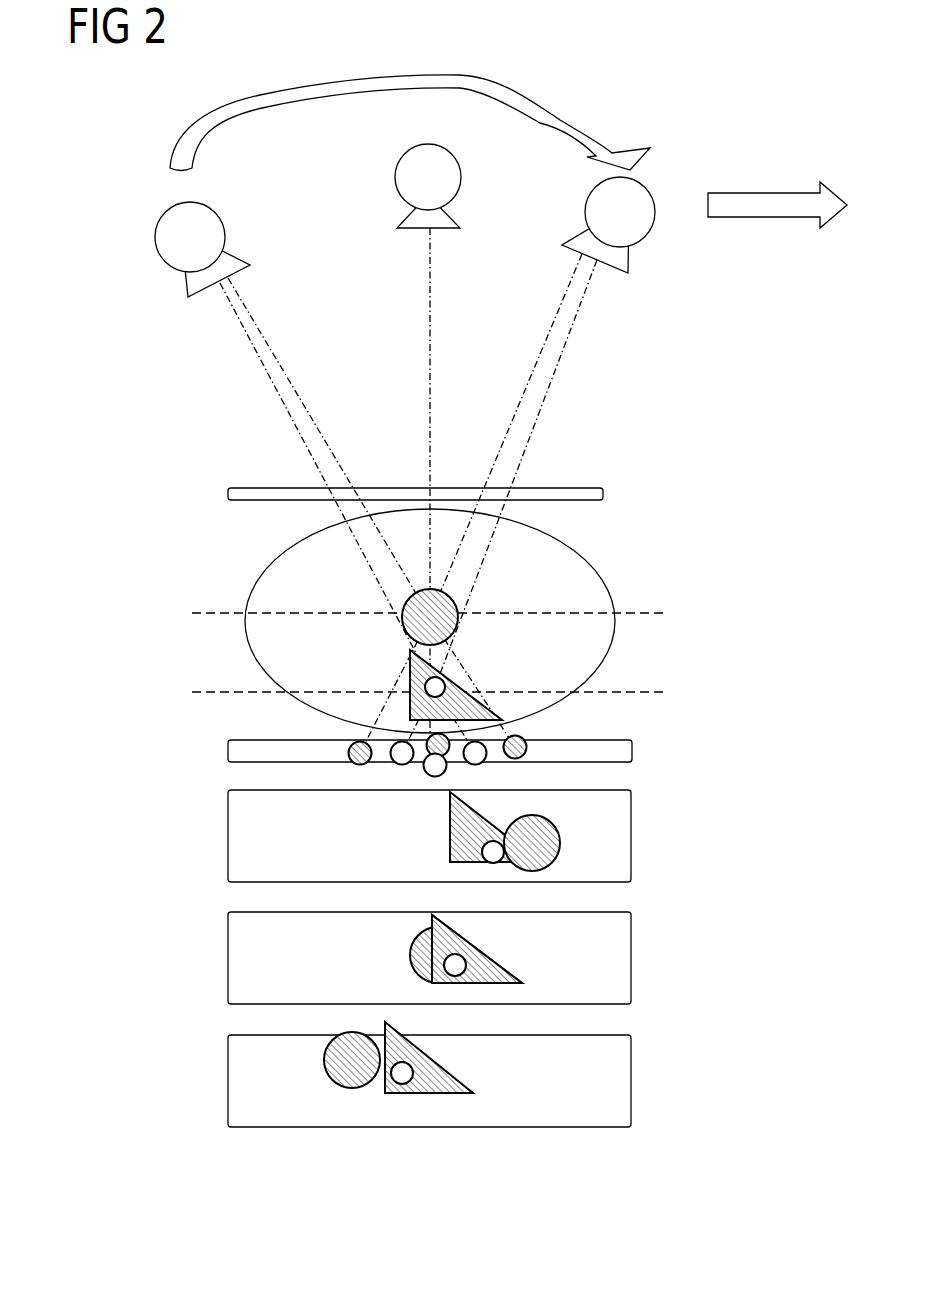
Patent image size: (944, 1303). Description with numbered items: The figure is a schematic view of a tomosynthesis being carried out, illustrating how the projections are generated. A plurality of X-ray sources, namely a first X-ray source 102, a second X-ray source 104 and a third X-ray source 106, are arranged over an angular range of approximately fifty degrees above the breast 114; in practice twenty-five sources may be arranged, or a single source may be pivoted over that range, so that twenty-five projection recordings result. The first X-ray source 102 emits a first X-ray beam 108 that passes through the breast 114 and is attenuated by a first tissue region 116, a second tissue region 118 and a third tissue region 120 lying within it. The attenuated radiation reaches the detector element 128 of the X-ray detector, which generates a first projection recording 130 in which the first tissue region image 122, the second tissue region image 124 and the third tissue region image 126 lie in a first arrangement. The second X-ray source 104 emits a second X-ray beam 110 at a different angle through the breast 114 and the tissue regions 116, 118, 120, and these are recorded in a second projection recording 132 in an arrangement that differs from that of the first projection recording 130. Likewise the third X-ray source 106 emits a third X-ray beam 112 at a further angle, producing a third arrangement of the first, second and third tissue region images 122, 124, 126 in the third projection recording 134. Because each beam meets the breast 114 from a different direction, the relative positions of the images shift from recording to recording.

The first X-ray source 102 is at (160, 253).
The second X-ray source 104 is at (395, 183).
The third X-ray source 106 is at (648, 240).
The first X-ray beam 108 is at (255, 350).
The second X-ray beam 110 is at (430, 287).
The third X-ray beam 112 is at (565, 350).
The breast 114 is at (248, 600).
The first tissue region 116 is at (458, 608).
The second tissue region 118 is at (493, 703).
The third tissue region 120 is at (455, 684).
The first tissue region image 122 is at (560, 840).
The second tissue region image 124 is at (448, 845).
The third tissue region image 126 is at (493, 862).
The detector element 128 is at (228, 750).
The first projection recording 130 is at (228, 852).
The second projection recording 132 is at (228, 972).
The third projection recording 134 is at (228, 1092).